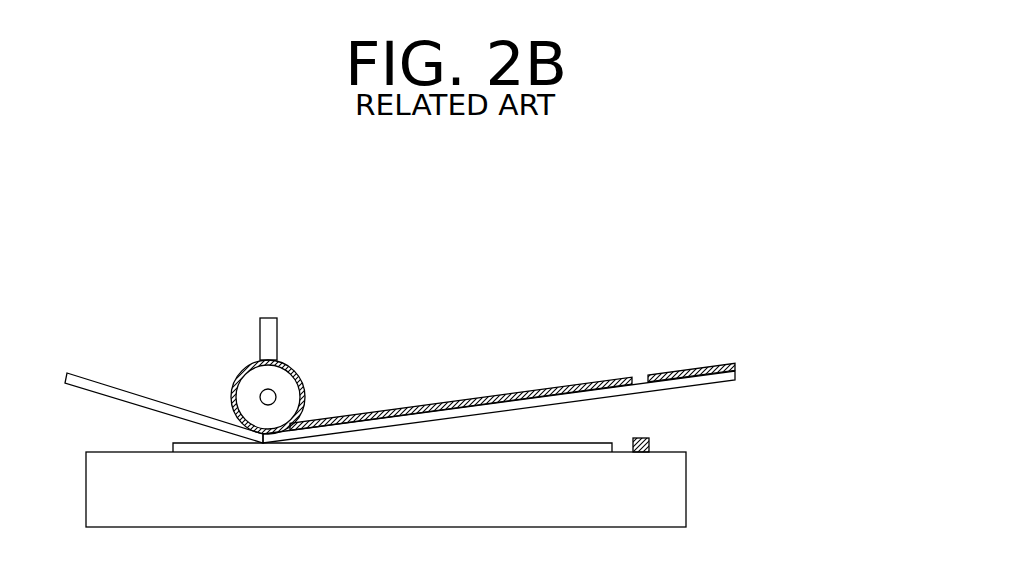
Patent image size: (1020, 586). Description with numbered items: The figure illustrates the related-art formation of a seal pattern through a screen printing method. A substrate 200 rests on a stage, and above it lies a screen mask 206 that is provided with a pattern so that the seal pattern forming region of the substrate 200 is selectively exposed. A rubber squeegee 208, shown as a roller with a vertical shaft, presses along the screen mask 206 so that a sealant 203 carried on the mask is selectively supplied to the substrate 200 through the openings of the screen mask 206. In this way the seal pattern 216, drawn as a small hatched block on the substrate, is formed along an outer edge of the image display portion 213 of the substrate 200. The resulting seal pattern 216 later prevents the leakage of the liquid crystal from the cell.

The substrate 200 is at (665, 498).
The sealant 203 is at (698, 369).
The screen mask 206 is at (735, 375).
The rubber squeegee 208 is at (283, 382).
The image display portion 213 is at (603, 450).
The seal pattern 216 is at (650, 441).